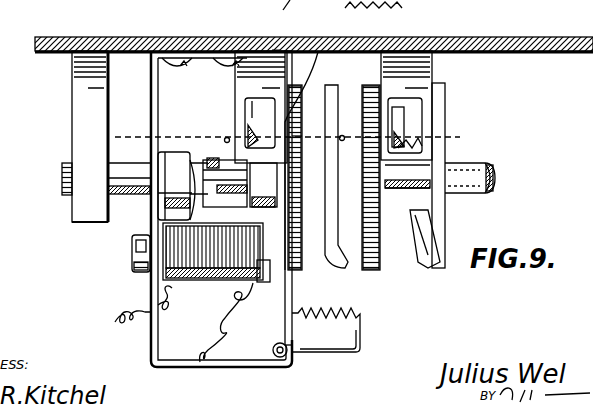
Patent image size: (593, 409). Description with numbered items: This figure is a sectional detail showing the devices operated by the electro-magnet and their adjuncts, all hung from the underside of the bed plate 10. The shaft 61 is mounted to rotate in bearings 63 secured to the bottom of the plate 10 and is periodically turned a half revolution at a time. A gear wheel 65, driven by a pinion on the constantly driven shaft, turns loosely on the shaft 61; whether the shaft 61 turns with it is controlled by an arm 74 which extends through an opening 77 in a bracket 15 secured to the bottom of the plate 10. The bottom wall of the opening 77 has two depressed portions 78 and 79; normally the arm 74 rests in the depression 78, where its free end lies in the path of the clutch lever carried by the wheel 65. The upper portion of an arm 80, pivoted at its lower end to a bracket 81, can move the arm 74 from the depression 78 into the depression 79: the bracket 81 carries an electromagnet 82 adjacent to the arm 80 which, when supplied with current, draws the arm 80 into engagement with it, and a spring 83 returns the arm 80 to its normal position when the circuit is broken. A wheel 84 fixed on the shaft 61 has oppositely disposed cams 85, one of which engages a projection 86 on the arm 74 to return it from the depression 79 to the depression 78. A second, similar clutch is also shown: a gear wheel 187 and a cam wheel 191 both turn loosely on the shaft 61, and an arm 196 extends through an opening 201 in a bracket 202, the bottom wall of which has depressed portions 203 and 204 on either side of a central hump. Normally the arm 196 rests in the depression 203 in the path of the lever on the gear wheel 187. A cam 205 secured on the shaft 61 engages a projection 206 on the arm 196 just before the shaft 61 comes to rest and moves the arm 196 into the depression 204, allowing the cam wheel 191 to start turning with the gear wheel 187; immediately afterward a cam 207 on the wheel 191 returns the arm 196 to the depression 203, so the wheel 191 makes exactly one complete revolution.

The bed plate 10 is at (537, 37).
The bracket 15 is at (276, 51).
The shaft 61 is at (478, 168).
The bearings 63 is at (72, 133).
The gear wheel 65 is at (319, 52).
The arm 74 is at (296, 118).
The opening 77 is at (255, 98).
The depressed portion 78 is at (300, 136).
The depressed portion 79 is at (257, 138).
The arm 80 is at (288, 288).
The bracket 81 is at (232, 367).
The electromagnet 82 is at (163, 248).
The spring 83 is at (330, 351).
The wheel 84 is at (217, 157).
The cams 85 is at (215, 158).
The projection 86 is at (226, 137).
The gear wheel 187 is at (376, 270).
The cam wheel 191 is at (440, 222).
The arm 196 is at (398, 140).
The opening 201 is at (415, 100).
The bracket 202 is at (414, 51).
The depressed portion 203 is at (402, 150).
The depressed portion 204 is at (402, 146).
The cam 205 is at (345, 268).
The projection 206 is at (343, 135).
The cam 207 is at (440, 263).